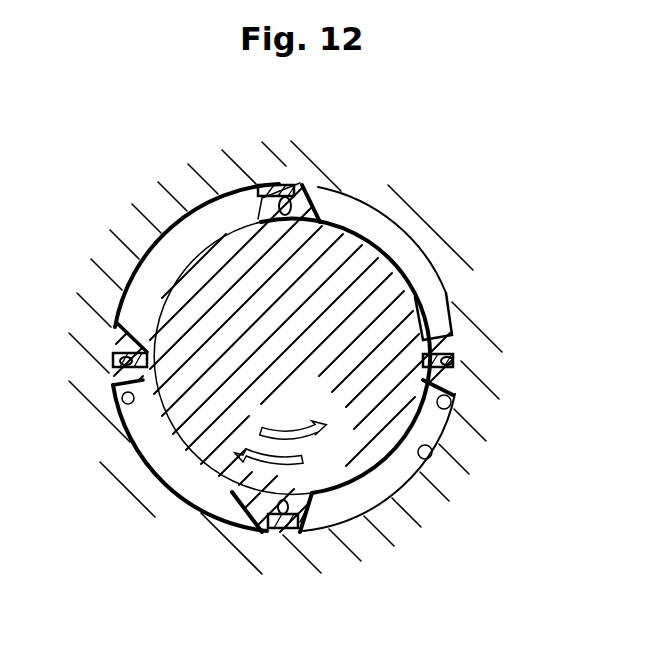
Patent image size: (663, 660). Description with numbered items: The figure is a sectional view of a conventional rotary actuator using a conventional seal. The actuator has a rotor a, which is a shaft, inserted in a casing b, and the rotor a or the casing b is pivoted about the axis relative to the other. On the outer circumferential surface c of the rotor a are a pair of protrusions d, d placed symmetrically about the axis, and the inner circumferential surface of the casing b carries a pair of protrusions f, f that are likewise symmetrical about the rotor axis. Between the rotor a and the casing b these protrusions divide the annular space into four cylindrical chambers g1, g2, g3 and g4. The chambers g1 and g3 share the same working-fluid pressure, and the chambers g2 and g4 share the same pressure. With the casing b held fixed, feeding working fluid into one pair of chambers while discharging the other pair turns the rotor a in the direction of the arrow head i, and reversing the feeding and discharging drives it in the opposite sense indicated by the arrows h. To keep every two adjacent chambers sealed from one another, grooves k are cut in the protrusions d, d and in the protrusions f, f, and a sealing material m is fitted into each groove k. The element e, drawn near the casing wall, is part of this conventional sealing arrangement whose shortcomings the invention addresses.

The rotor a is at (365, 258).
The casing b is at (294, 383).
The outer circumferential surface c is at (440, 300).
The protrusion d is at (322, 212).
The retaining element e is at (430, 468).
The protrusion f is at (452, 410).
The cylindrical chamber g1 is at (430, 248).
The cylindrical chamber g2 is at (418, 465).
The cylindrical chamber g3 is at (193, 490).
The cylindrical chamber g4 is at (165, 225).
The rotation direction arrows h is at (281, 432).
The arrow head i is at (306, 510).
The groove k is at (284, 186).
The sealing material m is at (258, 190).